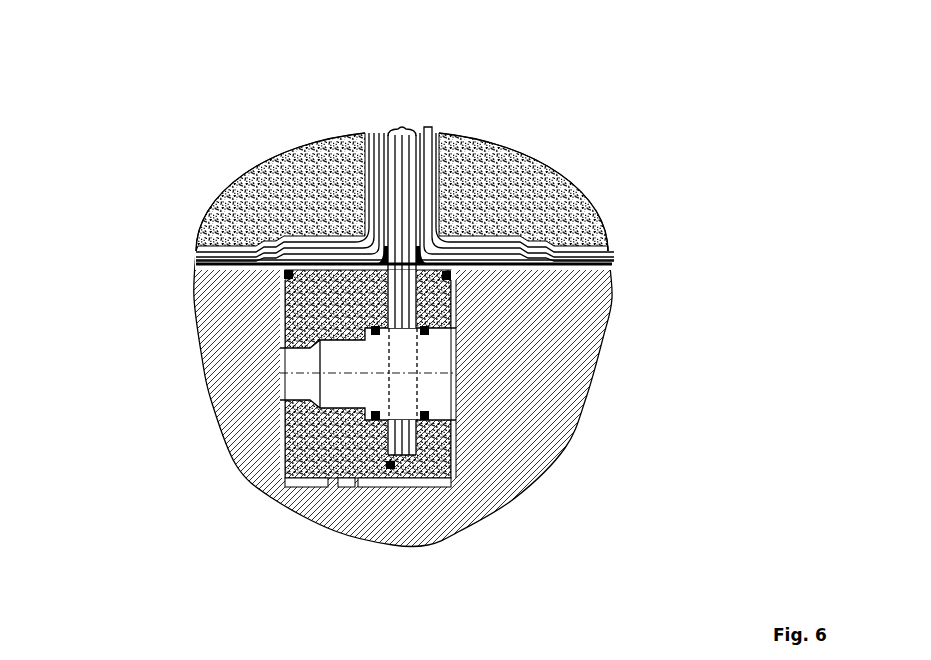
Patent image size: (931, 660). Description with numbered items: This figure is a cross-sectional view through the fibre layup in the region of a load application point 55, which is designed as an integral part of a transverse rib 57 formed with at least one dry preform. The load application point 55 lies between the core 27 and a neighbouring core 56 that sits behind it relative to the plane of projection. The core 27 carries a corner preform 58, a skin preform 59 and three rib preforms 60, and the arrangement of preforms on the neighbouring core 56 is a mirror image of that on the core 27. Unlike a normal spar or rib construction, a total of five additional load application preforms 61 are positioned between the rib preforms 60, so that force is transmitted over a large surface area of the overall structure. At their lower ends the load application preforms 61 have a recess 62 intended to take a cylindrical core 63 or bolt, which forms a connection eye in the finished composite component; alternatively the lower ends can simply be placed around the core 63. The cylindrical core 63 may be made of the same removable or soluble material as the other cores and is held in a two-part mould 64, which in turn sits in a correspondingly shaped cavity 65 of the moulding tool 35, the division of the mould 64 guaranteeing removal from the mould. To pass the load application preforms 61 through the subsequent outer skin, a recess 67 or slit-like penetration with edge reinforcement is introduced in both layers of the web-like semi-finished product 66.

The core 27 is at (477, 199).
The moulding tool 35 is at (385, 512).
The load application point 55 is at (432, 390).
The neighbouring core 56 is at (284, 202).
The rib 57 is at (337, 157).
The corner preform 58 is at (598, 242).
The skin preform 59 is at (607, 250).
The rib preforms 60 is at (420, 117).
The load application preforms 61 is at (394, 117).
The recess 62 is at (398, 352).
The cylindrical core 63 is at (327, 360).
The two-part mould 64 is at (310, 443).
The cavity 65 is at (270, 411).
The web-like semi-finished product 66 is at (604, 256).
The recess 67 is at (323, 264).